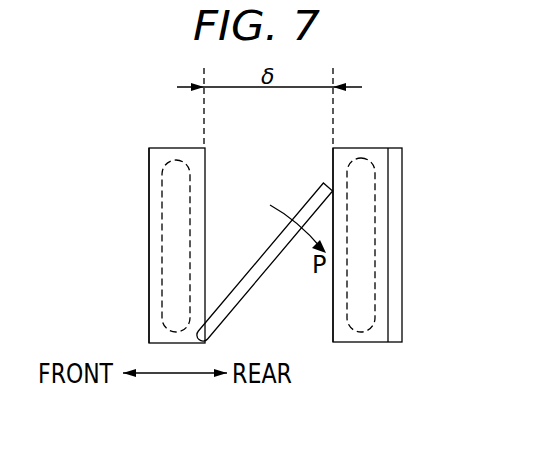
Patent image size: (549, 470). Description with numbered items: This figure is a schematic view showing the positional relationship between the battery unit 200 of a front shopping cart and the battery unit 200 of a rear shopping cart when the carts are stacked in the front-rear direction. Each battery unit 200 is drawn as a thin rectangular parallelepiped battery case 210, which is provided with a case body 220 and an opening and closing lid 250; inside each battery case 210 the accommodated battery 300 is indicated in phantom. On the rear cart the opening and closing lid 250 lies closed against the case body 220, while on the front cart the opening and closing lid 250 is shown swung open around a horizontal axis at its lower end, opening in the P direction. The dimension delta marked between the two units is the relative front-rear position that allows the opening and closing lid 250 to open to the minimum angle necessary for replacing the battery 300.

The battery unit 200 is at (271, 210).
The battery case 210 is at (149, 222).
The case body 220 is at (155, 285).
The opening and closing lid 250 is at (272, 257).
The battery 300 is at (185, 198).